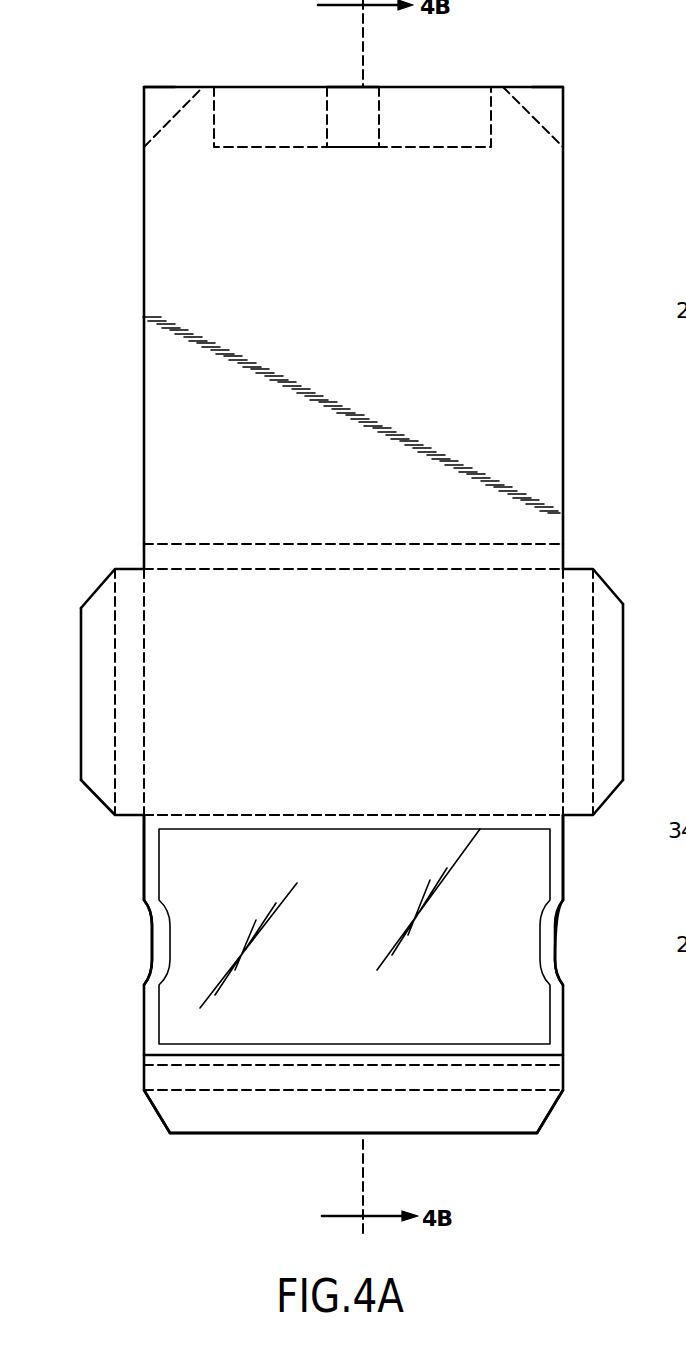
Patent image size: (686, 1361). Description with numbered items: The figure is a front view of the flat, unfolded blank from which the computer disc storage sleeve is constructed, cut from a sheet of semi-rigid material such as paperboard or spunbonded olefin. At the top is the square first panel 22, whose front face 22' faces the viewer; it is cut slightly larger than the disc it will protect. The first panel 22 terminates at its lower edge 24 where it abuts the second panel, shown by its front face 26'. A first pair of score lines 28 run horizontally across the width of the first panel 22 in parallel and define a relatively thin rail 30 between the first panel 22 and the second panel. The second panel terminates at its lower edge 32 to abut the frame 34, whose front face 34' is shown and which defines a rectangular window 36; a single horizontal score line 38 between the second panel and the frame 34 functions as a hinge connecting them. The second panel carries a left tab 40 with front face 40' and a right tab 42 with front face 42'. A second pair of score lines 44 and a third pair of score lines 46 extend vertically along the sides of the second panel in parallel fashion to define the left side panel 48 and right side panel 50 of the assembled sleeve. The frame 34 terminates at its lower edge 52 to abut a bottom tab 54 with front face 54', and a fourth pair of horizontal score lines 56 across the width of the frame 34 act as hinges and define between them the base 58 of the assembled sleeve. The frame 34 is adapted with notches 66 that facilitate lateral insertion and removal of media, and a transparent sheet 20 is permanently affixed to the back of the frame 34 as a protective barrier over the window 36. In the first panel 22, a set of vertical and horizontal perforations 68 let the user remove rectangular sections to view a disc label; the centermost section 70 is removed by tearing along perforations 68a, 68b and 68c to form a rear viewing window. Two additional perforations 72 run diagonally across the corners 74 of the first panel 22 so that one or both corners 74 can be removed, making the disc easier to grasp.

The transparent sheet 20 is at (182, 992).
The first panel 22 is at (316, 315).
The front face of first panel 22' is at (367, 310).
The lower edge of first panel 24 is at (260, 540).
The front face of second panel 26' is at (353, 692).
The first pair of score lines 28 is at (362, 542).
The rail 30 is at (460, 553).
The lower edge of second panel 32 is at (245, 790).
The frame 34 is at (302, 857).
The front face of frame 34' is at (352, 936).
The window 36 is at (358, 923).
The score line 38 is at (330, 815).
The left tab 40 is at (45, 694).
The front face of left tab 40' is at (75, 692).
The right tab 42 is at (652, 692).
The front face of right tab 42' is at (639, 692).
The second pair of score lines 44 is at (115, 745).
The third pair of score lines 46 is at (593, 750).
The left side panel 48 is at (120, 568).
The right side panel 50 is at (577, 590).
The lower edge of frame 52 is at (278, 1044).
The bottom tab 54 is at (353, 1149).
The front face of bottom tab 54' is at (353, 1154).
The fourth pair of score lines 56 is at (455, 1060).
The base 58 is at (368, 1066).
The notches 66 is at (152, 940).
The perforations 68 is at (226, 147).
The perforation 68a is at (327, 112).
The perforation 68b is at (341, 148).
The perforation 68c is at (380, 115).
The centermost section 70 is at (345, 95).
The diagonal perforations 72 is at (166, 125).
The corners 74 is at (160, 95).